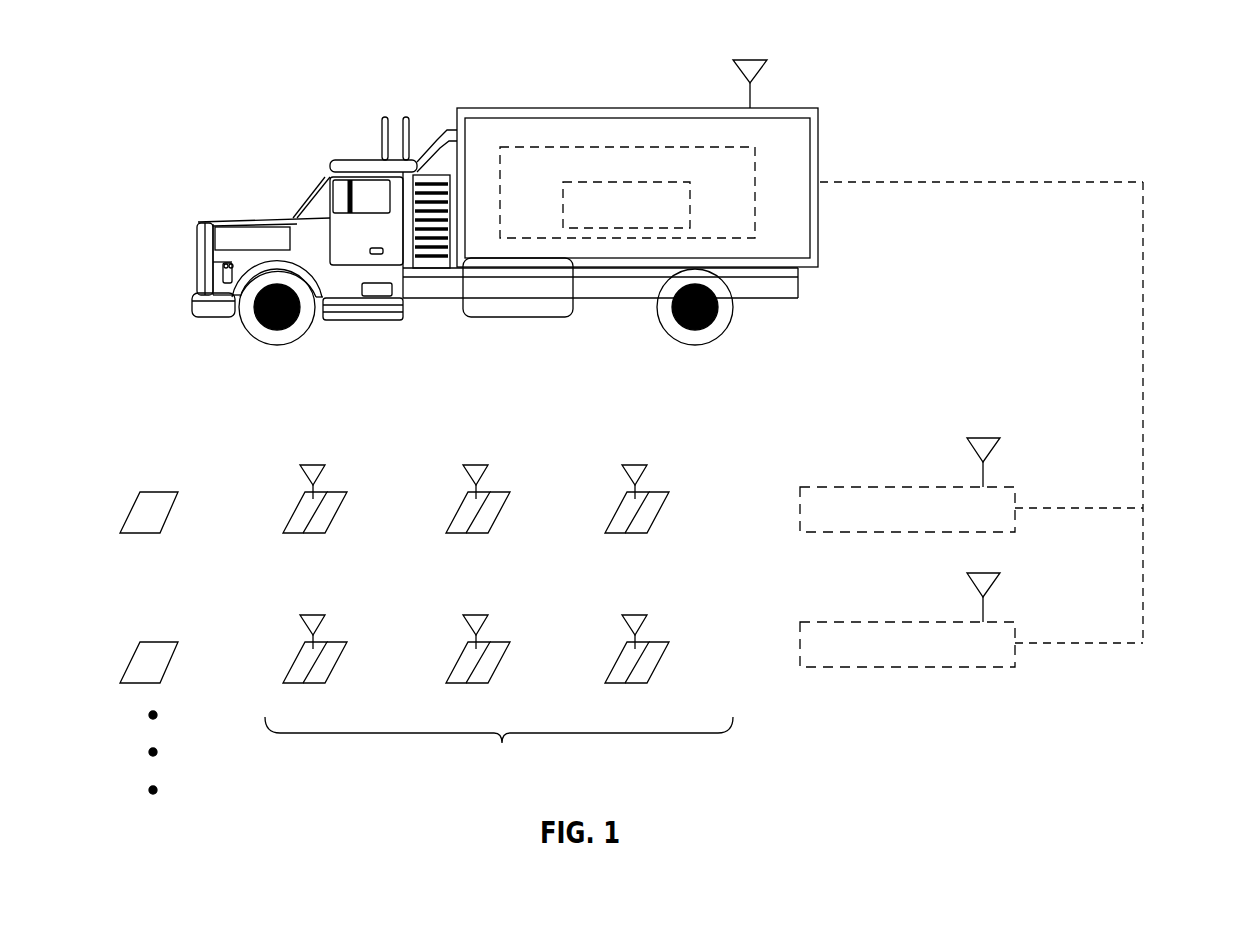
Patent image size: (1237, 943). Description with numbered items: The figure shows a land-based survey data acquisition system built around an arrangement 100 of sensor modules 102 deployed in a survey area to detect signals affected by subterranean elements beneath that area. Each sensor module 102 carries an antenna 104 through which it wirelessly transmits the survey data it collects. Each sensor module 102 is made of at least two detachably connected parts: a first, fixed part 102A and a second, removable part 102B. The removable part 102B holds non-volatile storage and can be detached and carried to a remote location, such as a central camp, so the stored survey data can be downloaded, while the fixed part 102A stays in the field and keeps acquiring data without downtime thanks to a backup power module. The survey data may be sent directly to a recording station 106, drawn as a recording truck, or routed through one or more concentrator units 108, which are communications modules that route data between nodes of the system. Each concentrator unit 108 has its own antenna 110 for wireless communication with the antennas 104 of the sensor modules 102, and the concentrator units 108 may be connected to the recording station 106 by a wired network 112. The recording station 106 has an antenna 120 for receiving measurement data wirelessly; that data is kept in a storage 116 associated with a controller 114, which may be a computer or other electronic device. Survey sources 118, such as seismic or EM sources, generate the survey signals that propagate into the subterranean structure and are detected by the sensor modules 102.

The arrangement of sensor modules 100 is at (499, 746).
The sensor module 102 is at (317, 492).
The first (fixed) part 102A is at (293, 522).
The second (removable) part 102B is at (313, 527).
The antenna 104 is at (308, 462).
The recording station 106 is at (366, 138).
The concentrator unit 108 is at (907, 485).
The antenna 110 is at (987, 437).
The wired network 112 is at (1147, 247).
The controller 114 is at (755, 193).
The storage 116 is at (692, 200).
The survey source 118 is at (152, 490).
The antenna 120 is at (760, 55).